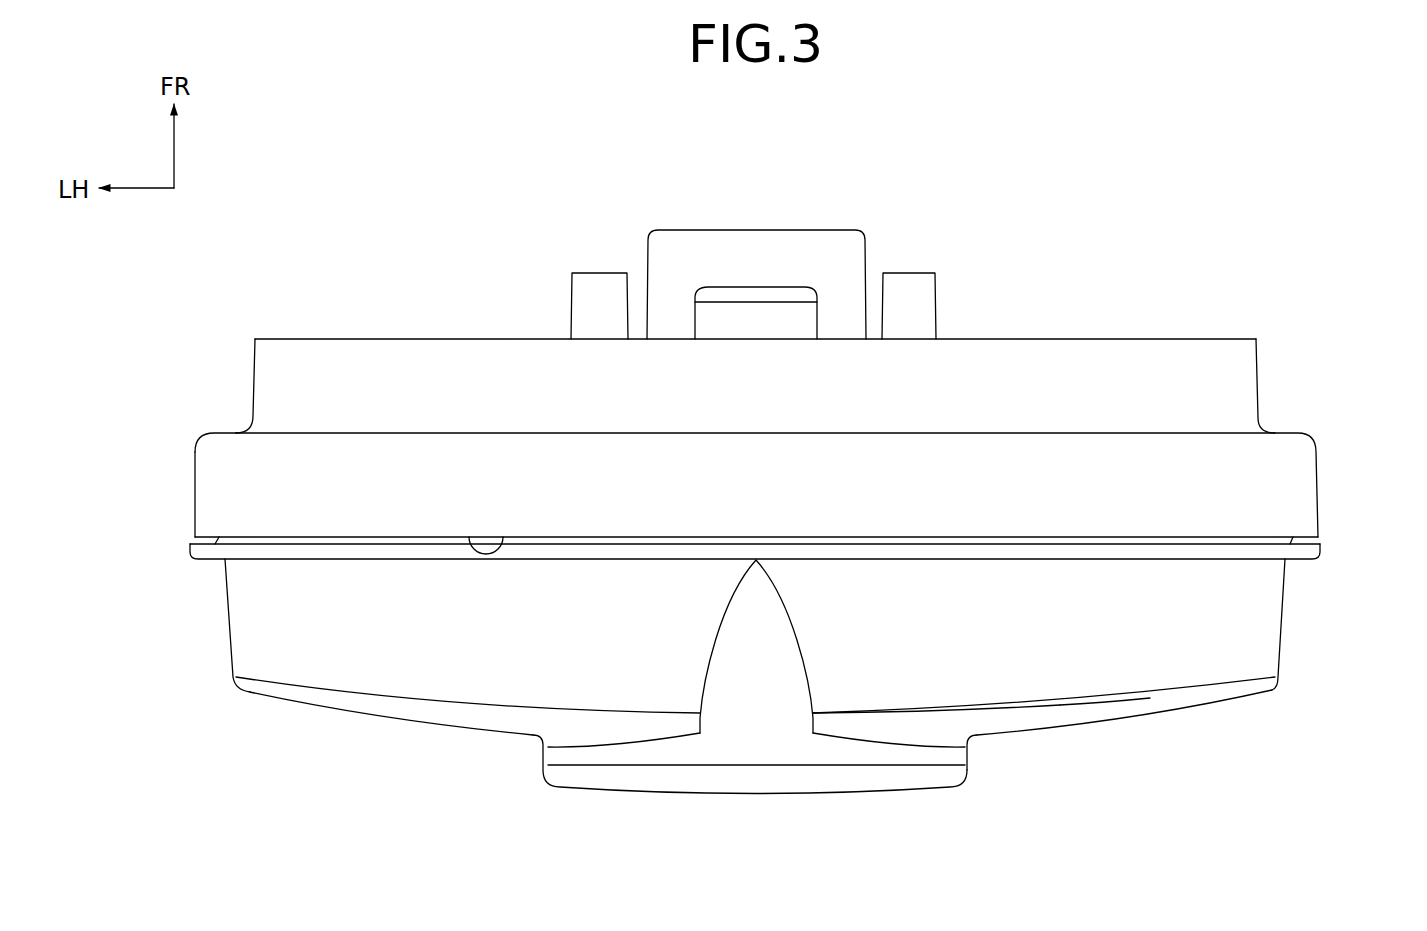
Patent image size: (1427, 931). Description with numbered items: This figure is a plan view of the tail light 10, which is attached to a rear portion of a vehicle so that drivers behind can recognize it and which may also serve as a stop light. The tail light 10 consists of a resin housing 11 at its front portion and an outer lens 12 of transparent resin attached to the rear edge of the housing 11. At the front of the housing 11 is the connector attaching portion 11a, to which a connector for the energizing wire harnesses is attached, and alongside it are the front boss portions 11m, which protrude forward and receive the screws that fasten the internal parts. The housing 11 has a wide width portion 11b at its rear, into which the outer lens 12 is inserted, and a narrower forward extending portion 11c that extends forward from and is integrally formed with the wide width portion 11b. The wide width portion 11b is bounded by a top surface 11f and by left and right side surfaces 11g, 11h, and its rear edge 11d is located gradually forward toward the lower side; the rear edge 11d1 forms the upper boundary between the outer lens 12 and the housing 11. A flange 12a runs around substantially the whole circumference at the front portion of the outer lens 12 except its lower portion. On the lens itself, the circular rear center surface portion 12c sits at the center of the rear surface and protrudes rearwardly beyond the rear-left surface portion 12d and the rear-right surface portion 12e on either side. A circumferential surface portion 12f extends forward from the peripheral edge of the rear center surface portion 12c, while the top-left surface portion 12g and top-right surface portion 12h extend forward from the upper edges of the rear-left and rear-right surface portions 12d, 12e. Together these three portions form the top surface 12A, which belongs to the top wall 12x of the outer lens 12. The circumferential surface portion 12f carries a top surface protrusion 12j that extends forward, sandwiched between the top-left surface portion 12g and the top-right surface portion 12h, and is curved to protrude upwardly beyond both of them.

The tail light 10 is at (372, 768).
The housing 11 is at (316, 337).
The connector attaching portion 11a is at (758, 242).
The wide width portion 11b is at (193, 467).
The forward extending portion 11c is at (252, 388).
The rear edge 11d is at (245, 545).
The rear edge 11d1 is at (466, 537).
The top surface 11f is at (1025, 470).
The left side surface 11g is at (193, 511).
The right side surface 11h is at (1318, 490).
The front boss portions 11m is at (595, 292).
The outer lens 12 is at (335, 714).
The top surface 12A is at (1153, 657).
The flange 12a is at (1298, 548).
The rear center surface portion 12c is at (748, 796).
The rear-left surface portion 12d is at (433, 728).
The rear-right surface portion 12e is at (1127, 720).
The circumferential surface portion 12f is at (967, 758).
The top-left surface portion 12g is at (285, 632).
The top-right surface portion 12h is at (1250, 627).
The top surface protrusion 12j is at (732, 627).
The top wall 12x is at (1002, 627).